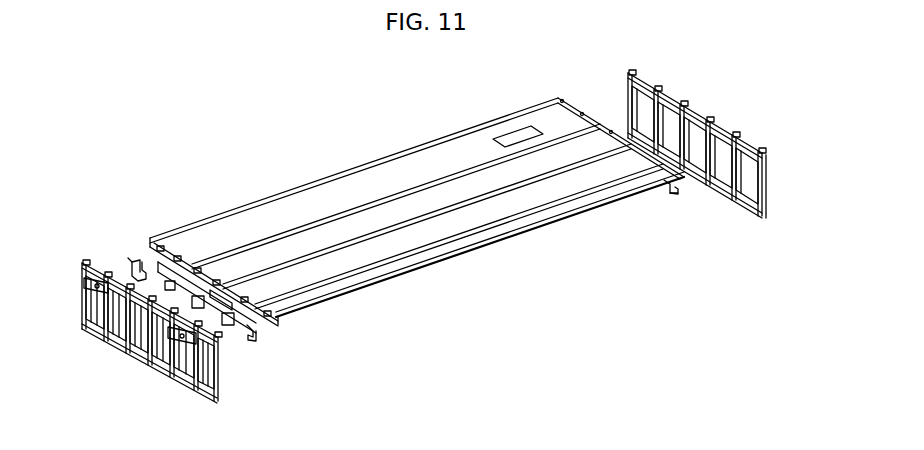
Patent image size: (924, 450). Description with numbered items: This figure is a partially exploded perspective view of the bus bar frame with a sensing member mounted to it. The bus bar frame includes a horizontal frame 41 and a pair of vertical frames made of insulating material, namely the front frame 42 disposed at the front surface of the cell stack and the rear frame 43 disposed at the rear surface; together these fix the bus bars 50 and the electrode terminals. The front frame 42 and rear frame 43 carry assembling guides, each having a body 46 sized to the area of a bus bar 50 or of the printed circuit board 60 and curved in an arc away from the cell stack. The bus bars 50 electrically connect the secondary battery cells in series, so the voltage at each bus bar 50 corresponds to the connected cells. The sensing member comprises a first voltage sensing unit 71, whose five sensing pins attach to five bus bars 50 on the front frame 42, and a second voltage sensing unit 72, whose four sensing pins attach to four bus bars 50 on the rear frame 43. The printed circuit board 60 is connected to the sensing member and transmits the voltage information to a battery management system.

The horizontal frame 41 is at (363, 190).
The front frame 42 is at (122, 342).
The rear frame 43 is at (724, 144).
The body 46 is at (748, 183).
The bus bar 50 is at (140, 352).
The printed circuit board 60 is at (222, 337).
The first voltage sensing unit 71 is at (140, 262).
The second voltage sensing unit 72 is at (672, 193).